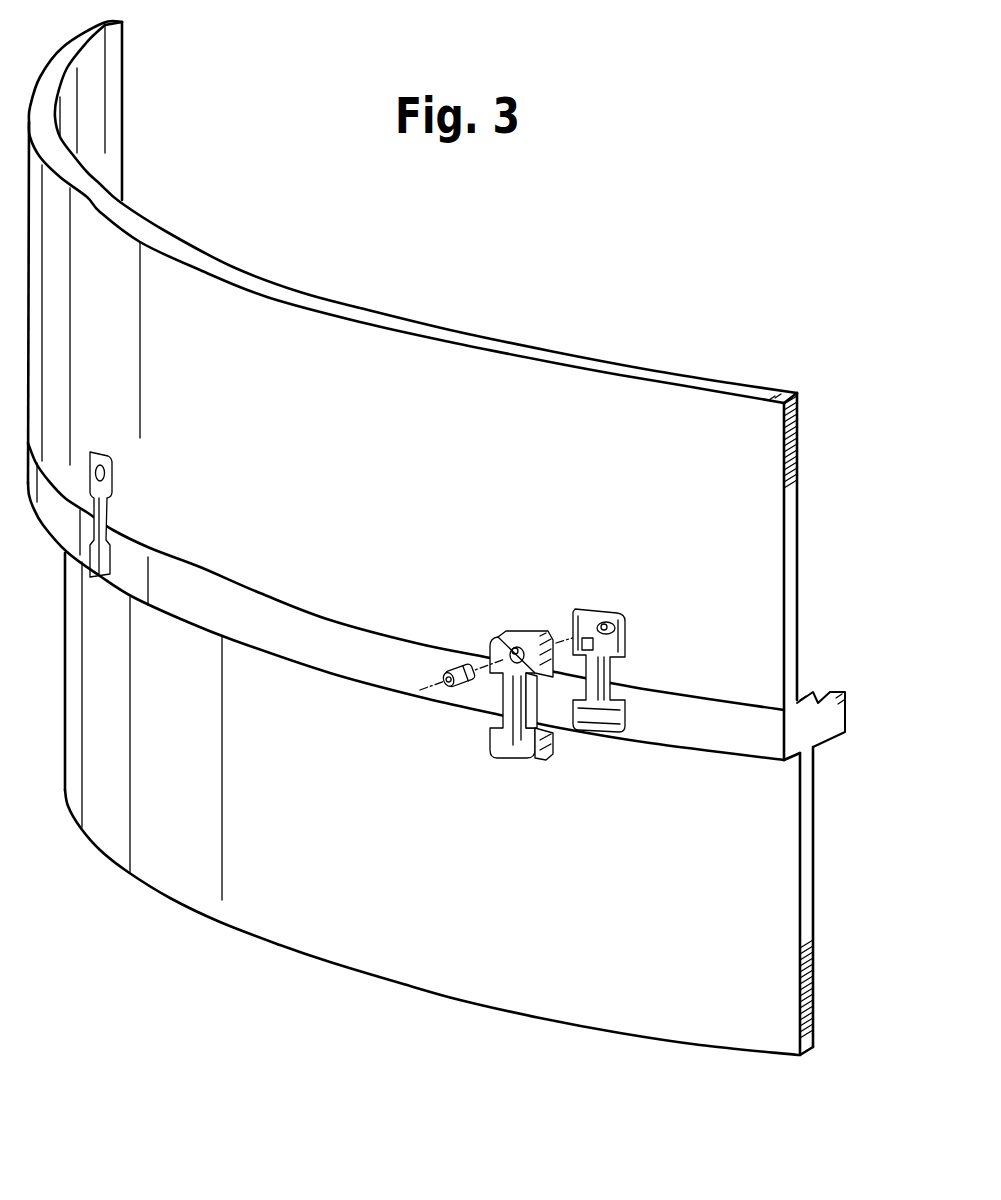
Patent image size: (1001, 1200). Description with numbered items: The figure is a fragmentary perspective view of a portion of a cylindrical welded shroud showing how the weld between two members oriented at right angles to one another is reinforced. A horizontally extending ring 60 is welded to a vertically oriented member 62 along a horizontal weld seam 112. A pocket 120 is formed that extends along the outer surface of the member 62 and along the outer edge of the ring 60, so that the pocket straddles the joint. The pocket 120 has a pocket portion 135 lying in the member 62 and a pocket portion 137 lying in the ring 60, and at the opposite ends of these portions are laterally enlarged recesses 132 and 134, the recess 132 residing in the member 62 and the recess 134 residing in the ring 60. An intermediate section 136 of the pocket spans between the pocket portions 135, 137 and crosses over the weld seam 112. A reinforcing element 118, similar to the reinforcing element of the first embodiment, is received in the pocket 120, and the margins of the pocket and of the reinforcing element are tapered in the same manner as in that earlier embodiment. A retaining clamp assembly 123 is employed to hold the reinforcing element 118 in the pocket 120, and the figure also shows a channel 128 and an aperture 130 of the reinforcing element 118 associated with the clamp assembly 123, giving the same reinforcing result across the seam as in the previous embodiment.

The ring 60 is at (818, 720).
The vertically oriented member 62 is at (703, 466).
The weld seam 112 is at (733, 703).
The reinforcing element 118 is at (473, 717).
The pocket 120 is at (590, 681).
The retaining clamp assembly 123 is at (456, 698).
The channel 128 is at (510, 700).
The aperture 130 is at (509, 652).
The laterally enlarged recess 132 is at (592, 613).
The laterally enlarged recess 134 is at (625, 718).
The pocket portion 135 is at (584, 641).
The intermediate section 136 is at (627, 663).
The pocket portion 137 is at (627, 702).